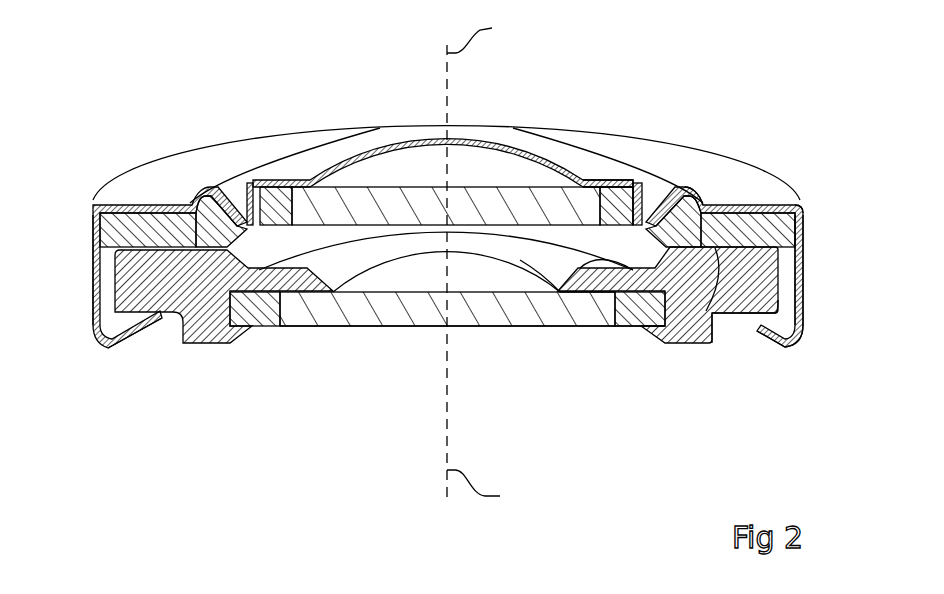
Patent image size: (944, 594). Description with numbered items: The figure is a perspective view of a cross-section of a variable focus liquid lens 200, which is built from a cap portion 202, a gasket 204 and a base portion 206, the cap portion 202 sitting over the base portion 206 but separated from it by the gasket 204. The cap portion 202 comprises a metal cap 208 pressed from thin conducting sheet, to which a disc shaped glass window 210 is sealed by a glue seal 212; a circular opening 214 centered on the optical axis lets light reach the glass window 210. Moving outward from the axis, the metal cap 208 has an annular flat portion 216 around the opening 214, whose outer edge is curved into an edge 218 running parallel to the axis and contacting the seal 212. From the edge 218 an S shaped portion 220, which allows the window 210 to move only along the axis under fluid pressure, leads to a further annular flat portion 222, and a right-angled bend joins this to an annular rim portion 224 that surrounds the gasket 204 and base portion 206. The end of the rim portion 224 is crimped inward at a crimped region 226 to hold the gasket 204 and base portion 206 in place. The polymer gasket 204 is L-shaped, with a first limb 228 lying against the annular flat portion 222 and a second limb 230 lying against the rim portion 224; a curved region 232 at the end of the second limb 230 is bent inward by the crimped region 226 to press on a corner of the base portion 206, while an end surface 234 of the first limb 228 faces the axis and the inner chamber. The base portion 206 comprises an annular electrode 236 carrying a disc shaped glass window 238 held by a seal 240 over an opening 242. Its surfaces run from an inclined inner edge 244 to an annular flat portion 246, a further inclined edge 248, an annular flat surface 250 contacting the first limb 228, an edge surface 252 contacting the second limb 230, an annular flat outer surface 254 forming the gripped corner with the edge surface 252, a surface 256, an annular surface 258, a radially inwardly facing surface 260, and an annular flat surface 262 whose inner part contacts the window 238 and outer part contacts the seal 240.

The lens 200 is at (445, 263).
The cap portion 202 is at (445, 260).
The gasket 204 is at (134, 231).
The base portion 206 is at (449, 344).
The metal cap 208 is at (92, 300).
The glass window 210 is at (488, 195).
The seal 212 is at (641, 180).
The circular opening 214 is at (400, 160).
The annular flat portion 216 is at (585, 180).
The edge 218 is at (648, 200).
The S shaped portion 220 is at (678, 205).
The annular flat portion 222 is at (742, 200).
The annular rim portion 224 is at (803, 233).
The crimped region 226 is at (817, 318).
The first limb 228 is at (793, 210).
The second limb 230 is at (792, 265).
The curved region 232 is at (758, 335).
The end surface 234 is at (215, 215).
The annular electrode 236 is at (163, 320).
The glass window 238 is at (333, 327).
The seal 240 is at (645, 320).
The opening 242 is at (417, 283).
The inner edge 244 is at (505, 255).
The annular flat portion 246 is at (545, 248).
The inclined edge 248 is at (576, 265).
The annular flat surface 250 is at (660, 315).
The edge surface 252 is at (757, 322).
The annular flat outer surface 254 is at (745, 318).
The surface 256 is at (721, 322).
The annular surface 258 is at (710, 320).
The radially inwardly facing surface 260 is at (622, 318).
The annular flat surface 262 is at (603, 290).